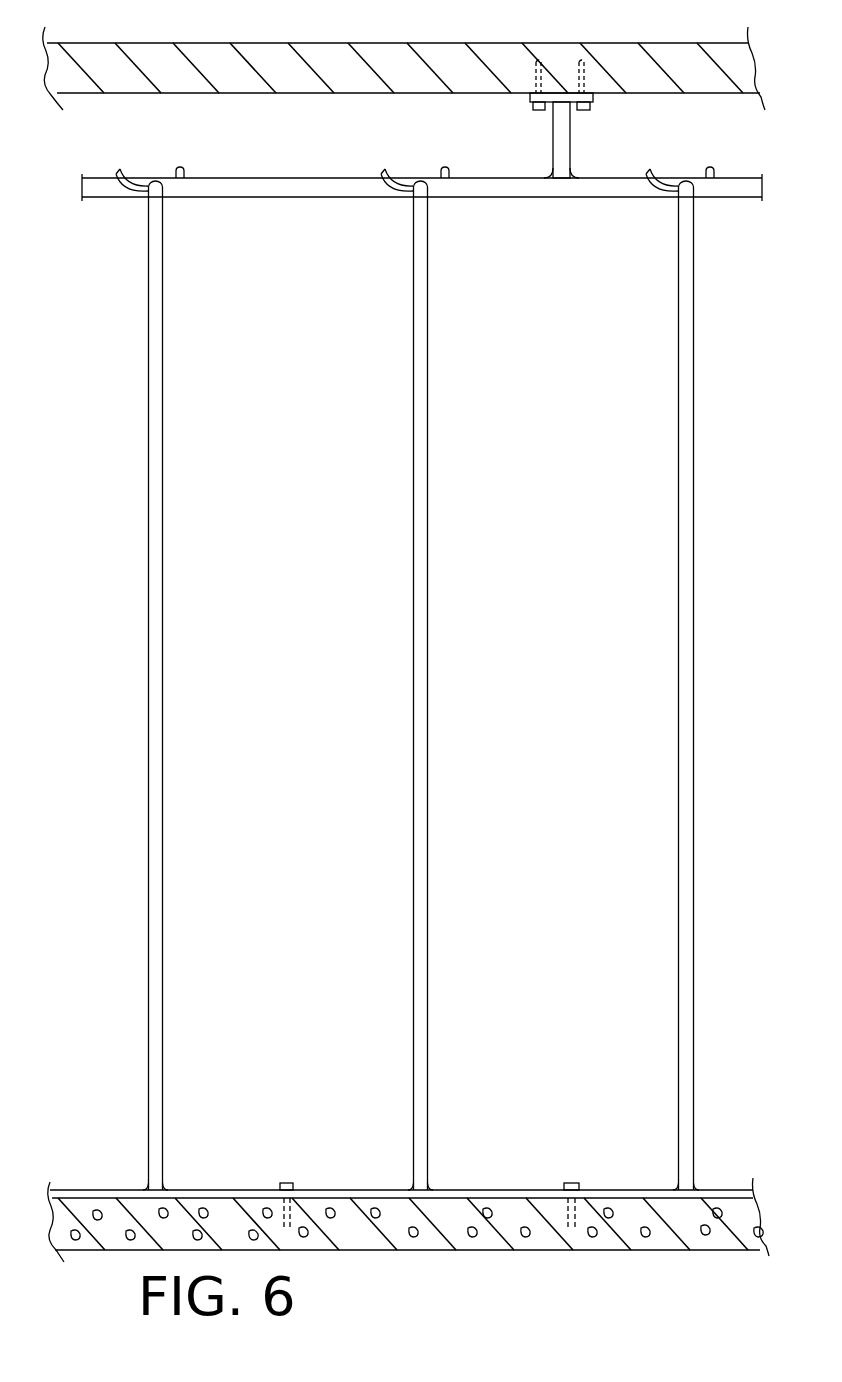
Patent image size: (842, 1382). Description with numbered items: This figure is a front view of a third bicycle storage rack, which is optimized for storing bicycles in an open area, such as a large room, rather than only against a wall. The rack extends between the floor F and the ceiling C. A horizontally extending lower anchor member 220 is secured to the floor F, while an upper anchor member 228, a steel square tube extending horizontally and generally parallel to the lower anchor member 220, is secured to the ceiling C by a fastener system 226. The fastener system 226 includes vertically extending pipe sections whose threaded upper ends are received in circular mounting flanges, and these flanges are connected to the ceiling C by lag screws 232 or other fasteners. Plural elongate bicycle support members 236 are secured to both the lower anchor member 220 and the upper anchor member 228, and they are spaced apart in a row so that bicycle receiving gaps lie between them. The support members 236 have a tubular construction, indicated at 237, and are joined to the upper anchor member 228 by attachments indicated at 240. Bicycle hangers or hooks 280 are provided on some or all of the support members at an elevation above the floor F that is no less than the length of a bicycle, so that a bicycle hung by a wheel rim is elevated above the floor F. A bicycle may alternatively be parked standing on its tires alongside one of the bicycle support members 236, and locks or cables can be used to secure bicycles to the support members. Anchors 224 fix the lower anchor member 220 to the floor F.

The ceiling C is at (318, 43).
The floor F is at (609, 1250).
The lower anchor member 220 is at (484, 1176).
The floor anchor bolt 224 is at (295, 1183).
The fastener system 226 is at (589, 155).
The upper anchor member 228 is at (297, 146).
The lag screws 232 is at (539, 112).
The bicycle support members 236 is at (366, 685).
The post tube 237 is at (163, 510).
The post bracket 240 is at (119, 170).
The bicycle hangers or hooks 280 is at (182, 171).